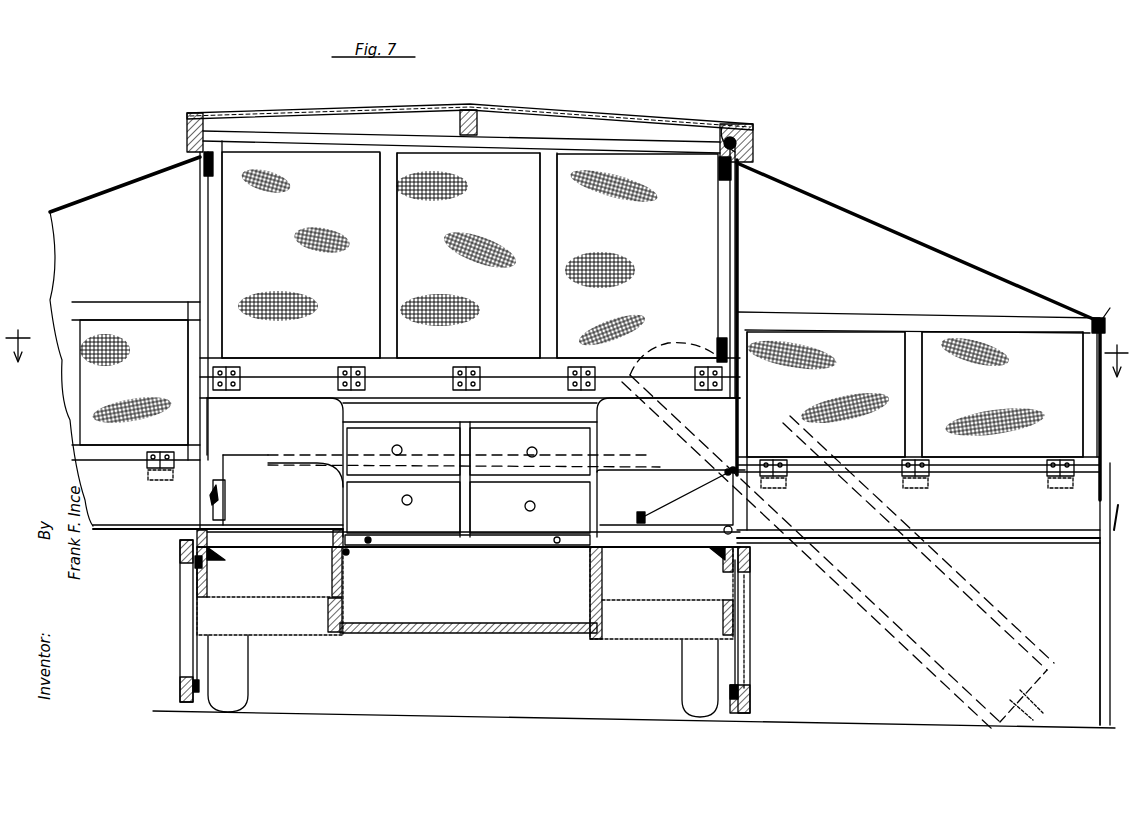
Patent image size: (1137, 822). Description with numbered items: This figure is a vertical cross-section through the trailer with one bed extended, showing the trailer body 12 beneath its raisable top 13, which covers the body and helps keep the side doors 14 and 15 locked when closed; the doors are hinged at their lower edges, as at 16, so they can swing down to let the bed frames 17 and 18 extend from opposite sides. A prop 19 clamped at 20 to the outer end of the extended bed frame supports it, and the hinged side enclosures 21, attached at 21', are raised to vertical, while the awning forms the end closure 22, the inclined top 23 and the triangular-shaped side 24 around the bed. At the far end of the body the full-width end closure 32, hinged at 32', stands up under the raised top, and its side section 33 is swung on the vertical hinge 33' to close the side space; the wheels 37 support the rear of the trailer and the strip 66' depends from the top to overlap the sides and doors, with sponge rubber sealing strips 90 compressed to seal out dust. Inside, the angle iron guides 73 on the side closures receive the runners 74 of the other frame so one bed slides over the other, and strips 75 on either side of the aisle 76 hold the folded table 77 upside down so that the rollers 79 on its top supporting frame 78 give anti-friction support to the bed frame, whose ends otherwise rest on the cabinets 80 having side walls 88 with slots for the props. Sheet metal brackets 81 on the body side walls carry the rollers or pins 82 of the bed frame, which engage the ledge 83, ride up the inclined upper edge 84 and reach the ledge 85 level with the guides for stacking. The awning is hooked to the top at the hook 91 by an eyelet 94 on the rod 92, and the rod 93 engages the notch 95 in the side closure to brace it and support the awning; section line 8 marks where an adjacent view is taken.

The section line 8 is at (567, 348).
The trailer body 12 is at (752, 585).
The raisable top 13 is at (597, 112).
The side door 14 is at (752, 657).
The side door 15 is at (182, 638).
The hinge 16 is at (182, 545).
The bed frame 17 is at (978, 538).
The bed frame 18 is at (222, 475).
The prop 19 is at (226, 508).
The clamp 20 is at (212, 492).
The side enclosure 21 is at (583, 466).
The hinge 21' is at (610, 459).
The end closure 22 is at (1103, 395).
The inclined top 23 is at (912, 240).
The triangular-shaped side 24 is at (973, 277).
The end closure 32 is at (490, 334).
The hinge 32' is at (470, 378).
The side section 33 is at (758, 317).
The vertical hinge 33' is at (678, 345).
The wheel 37 is at (245, 665).
The depending strip 66' is at (918, 236).
The angle iron guide 73 is at (244, 458).
The runner 74 is at (1048, 540).
The strip 75 is at (347, 553).
The aisle 76 is at (580, 585).
The folded table 77 is at (455, 548).
The top supporting frame 78 is at (418, 536).
The roller 79 is at (372, 538).
The cabinet 80 is at (343, 585).
The sheet metal bracket 81 is at (685, 500).
The roller or pin 82 is at (726, 470).
The ledge 83 is at (647, 518).
The inclined upper edge 84 is at (668, 498).
The ledge 85 is at (745, 496).
The side wall 88 is at (345, 416).
The sponge rubber sealing strip 90 is at (752, 695).
The hook 91 is at (730, 130).
The rod 92 is at (757, 140).
The rod 93 is at (1113, 303).
The eyelet 94 is at (722, 142).
The notch 95 is at (1090, 330).